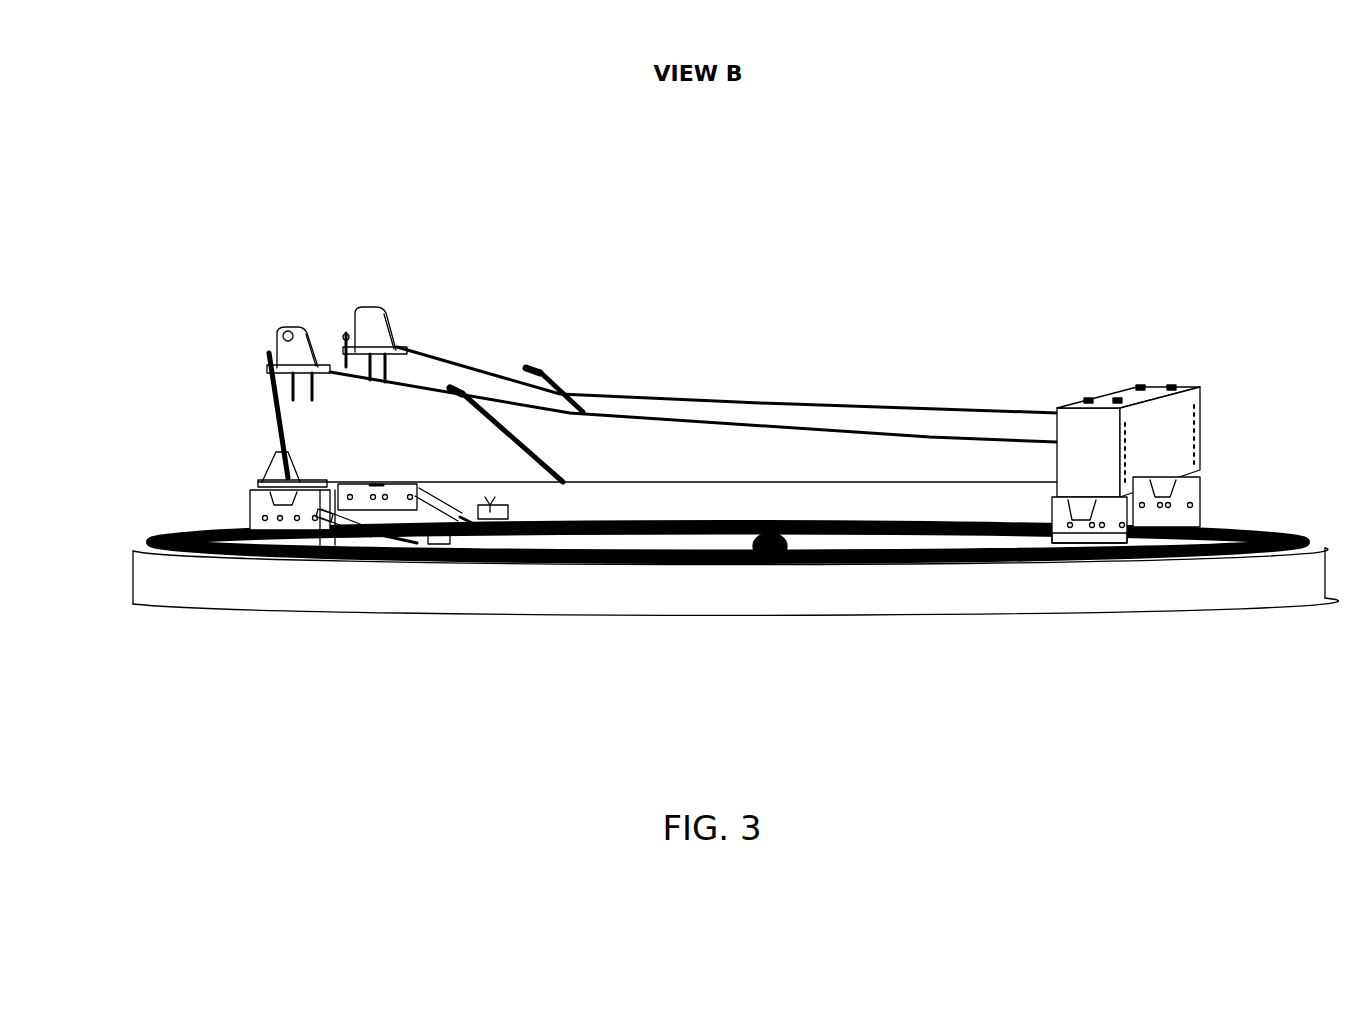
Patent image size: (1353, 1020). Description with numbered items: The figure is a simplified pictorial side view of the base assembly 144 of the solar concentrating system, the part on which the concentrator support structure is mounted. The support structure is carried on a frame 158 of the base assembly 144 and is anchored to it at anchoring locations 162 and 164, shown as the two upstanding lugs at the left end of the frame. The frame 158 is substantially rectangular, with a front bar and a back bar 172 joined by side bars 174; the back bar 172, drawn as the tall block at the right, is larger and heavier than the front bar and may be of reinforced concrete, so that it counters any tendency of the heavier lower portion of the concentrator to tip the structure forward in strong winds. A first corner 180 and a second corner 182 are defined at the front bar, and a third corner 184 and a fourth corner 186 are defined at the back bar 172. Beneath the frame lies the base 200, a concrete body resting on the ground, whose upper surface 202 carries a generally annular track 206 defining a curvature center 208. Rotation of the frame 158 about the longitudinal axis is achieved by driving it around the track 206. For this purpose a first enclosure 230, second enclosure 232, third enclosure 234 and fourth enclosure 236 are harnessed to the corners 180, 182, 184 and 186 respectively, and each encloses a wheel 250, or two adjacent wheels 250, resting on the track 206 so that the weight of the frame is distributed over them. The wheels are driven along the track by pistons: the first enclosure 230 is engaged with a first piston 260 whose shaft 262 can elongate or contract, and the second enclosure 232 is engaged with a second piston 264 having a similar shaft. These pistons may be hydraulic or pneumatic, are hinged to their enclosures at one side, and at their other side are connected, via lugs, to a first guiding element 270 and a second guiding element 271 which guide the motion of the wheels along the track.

The base assembly 144 is at (253, 182).
The frame 158 is at (903, 417).
The anchoring location 162 is at (363, 322).
The anchoring location 164 is at (288, 333).
The back bar 172 is at (1148, 443).
The side bars 174 is at (673, 400).
The first corner 180 is at (268, 562).
The second corner 182 is at (397, 380).
The third corner 184 is at (1155, 560).
The fourth corner 186 is at (1197, 400).
The base 200 is at (552, 587).
The upper surface 202 is at (153, 547).
The track 206 is at (202, 533).
The curvature center 208 is at (780, 558).
The first enclosure 230 is at (313, 562).
The second enclosure 232 is at (393, 493).
The third enclosure 234 is at (1080, 560).
The fourth enclosure 236 is at (1207, 560).
The wheel 250 is at (242, 563).
The first piston 260 is at (360, 563).
The shaft 262 is at (387, 563).
The second piston 264 is at (417, 489).
The first guiding element 270 is at (430, 562).
The second guiding element 271 is at (512, 511).